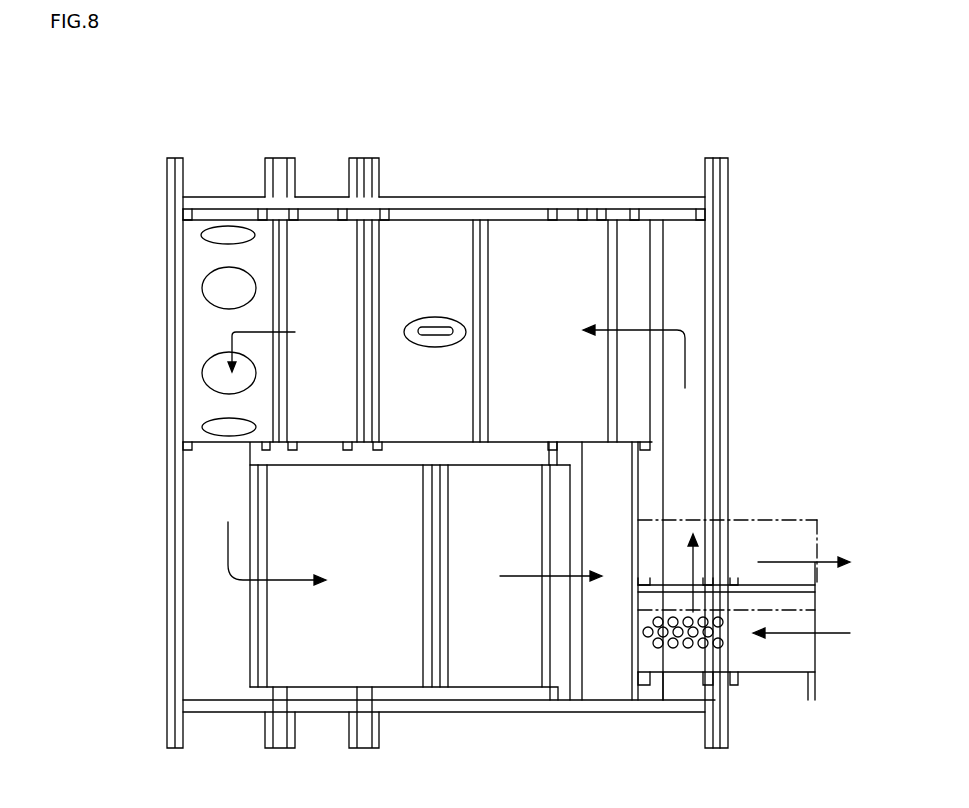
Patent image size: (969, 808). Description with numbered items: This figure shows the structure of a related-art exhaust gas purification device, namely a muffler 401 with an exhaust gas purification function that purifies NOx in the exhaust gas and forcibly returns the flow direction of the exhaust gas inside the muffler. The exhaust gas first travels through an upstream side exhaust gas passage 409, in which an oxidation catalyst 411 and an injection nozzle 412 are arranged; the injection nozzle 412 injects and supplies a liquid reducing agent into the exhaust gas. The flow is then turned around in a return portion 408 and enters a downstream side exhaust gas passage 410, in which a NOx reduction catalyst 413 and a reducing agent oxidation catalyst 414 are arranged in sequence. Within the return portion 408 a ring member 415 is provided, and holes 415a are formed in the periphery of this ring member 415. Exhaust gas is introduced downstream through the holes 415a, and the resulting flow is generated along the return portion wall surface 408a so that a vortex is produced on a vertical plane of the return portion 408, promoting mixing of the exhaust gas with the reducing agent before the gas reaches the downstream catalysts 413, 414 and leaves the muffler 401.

The muffler 401 is at (734, 132).
The return portion 408 is at (197, 506).
The return portion wall surface 408a is at (222, 218).
The upstream side exhaust gas passage 409 is at (428, 222).
The downstream side exhaust gas passage 410 is at (428, 683).
The oxidation catalyst 411 is at (593, 230).
The injection nozzle 412 is at (439, 346).
The NOx reduction catalyst 413 is at (332, 667).
The reducing agent oxidation catalyst 414 is at (508, 672).
The ring member 415 is at (197, 333).
The holes 415a is at (222, 282).